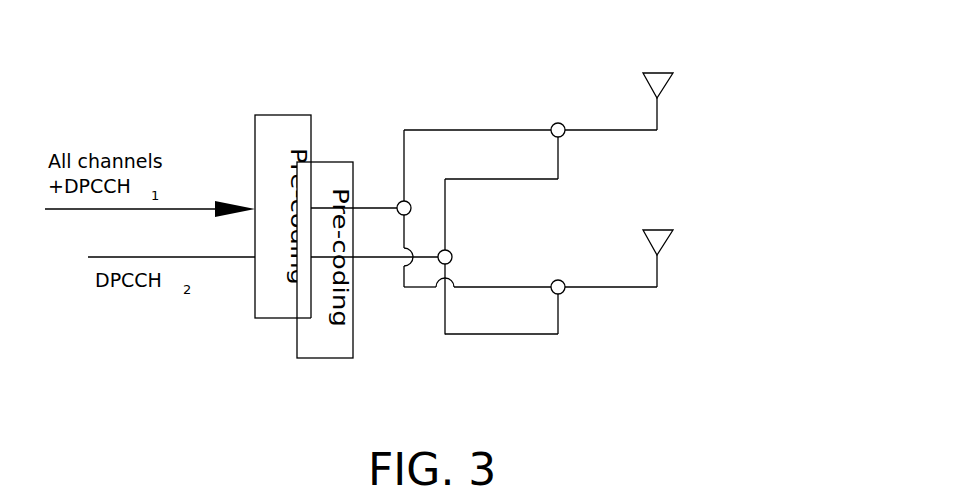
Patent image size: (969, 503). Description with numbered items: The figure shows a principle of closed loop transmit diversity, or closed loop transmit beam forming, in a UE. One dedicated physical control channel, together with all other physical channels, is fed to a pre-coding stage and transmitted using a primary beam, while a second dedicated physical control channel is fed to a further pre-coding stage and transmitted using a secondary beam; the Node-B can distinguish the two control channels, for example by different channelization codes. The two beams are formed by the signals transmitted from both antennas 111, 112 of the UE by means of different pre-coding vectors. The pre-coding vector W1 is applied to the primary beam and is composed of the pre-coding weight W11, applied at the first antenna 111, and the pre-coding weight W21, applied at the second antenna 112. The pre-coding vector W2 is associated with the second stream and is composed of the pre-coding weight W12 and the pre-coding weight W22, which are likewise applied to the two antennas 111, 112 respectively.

The pre-coding vector W1 is at (463, 156).
The pre-coding weight W11 is at (490, 130).
The pre-coding weight W12 is at (500, 179).
The pre-coding weight W21 is at (503, 287).
The pre-coding weight W22 is at (558, 315).
The pre-coding vector W2 is at (510, 387).
The antenna 111 is at (736, 70).
The antenna 112 is at (733, 229).